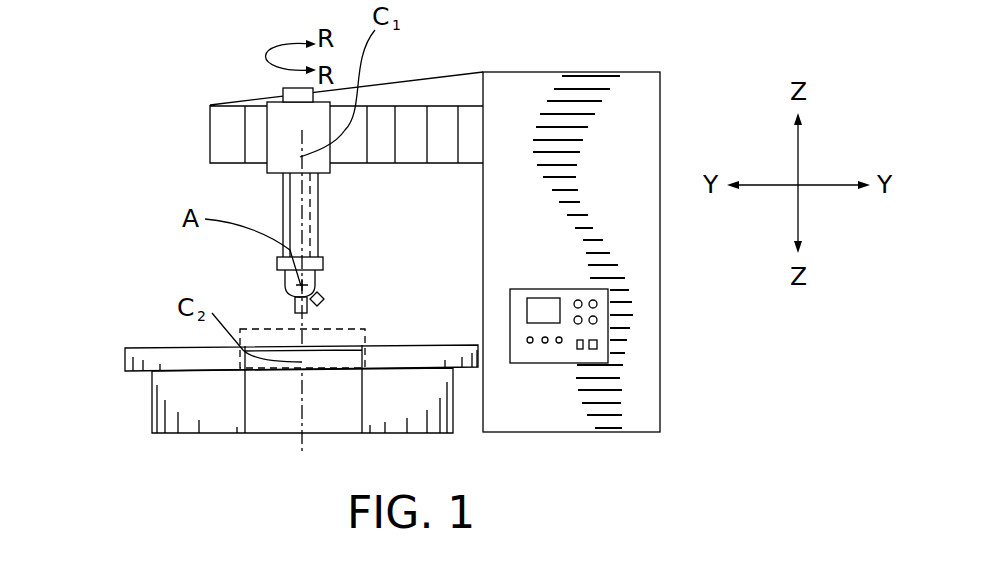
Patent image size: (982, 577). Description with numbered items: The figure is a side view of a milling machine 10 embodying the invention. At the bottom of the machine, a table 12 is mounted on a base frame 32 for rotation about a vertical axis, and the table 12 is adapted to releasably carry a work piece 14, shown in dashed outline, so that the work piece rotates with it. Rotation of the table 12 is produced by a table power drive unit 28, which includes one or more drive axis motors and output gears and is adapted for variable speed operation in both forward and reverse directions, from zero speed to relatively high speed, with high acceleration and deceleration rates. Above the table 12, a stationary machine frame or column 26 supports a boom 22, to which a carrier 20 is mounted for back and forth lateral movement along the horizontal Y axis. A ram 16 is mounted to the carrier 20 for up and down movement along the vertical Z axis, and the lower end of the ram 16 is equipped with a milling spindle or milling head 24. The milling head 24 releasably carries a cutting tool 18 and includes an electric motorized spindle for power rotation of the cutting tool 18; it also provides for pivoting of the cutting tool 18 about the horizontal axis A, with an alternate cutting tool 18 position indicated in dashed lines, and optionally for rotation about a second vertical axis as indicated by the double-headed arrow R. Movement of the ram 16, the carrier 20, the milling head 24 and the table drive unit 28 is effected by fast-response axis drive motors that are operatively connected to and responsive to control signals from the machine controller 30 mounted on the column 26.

The milling machine 10 is at (390, 236).
The table 12 is at (125, 358).
The work piece 14 is at (368, 337).
The ram 16 is at (285, 192).
The cutting tool 18 is at (295, 304).
The carrier 20 is at (272, 118).
The boom 22 is at (405, 106).
The milling head 24 is at (322, 287).
The column 26 is at (663, 394).
The drive unit 28 is at (245, 400).
The machine controller 30 is at (608, 327).
The base frame 32 is at (150, 402).